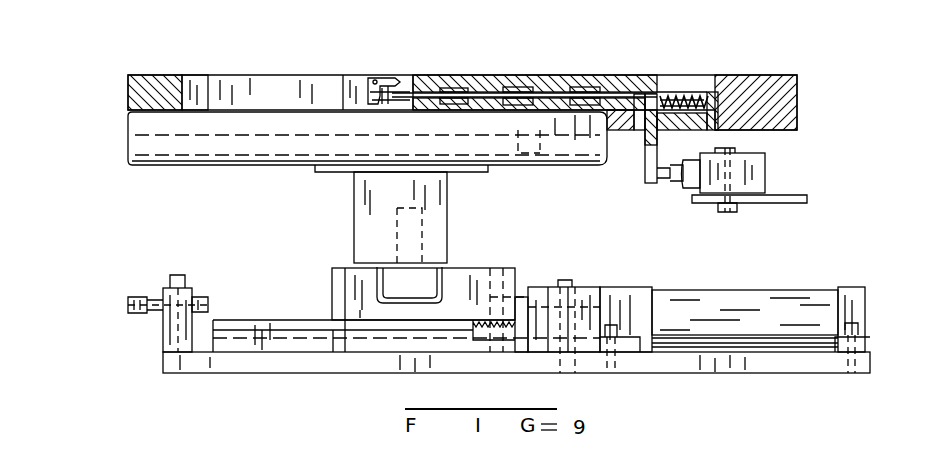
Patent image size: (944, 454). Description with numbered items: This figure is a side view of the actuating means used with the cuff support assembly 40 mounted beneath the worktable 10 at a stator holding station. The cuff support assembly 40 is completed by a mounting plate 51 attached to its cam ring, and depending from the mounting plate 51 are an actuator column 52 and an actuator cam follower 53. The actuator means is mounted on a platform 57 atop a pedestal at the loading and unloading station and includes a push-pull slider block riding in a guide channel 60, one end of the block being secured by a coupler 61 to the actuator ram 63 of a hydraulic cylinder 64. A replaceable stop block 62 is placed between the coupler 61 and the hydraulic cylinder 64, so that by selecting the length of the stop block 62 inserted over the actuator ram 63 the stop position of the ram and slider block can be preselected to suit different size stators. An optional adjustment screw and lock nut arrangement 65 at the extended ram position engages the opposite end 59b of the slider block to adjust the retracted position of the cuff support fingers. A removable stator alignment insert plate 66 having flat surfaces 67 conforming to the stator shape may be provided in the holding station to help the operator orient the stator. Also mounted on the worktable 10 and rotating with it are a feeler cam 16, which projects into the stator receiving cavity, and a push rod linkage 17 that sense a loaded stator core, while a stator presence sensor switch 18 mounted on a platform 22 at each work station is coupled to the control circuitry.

The worktable 10 is at (765, 75).
The feeler cam 16 is at (368, 92).
The push rod linkage 17 is at (548, 90).
The stator presence sensor switch 18 is at (690, 185).
The platform 22 is at (790, 195).
The cuff support assembly 40 is at (190, 168).
The mounting plate 51 is at (466, 173).
The actuator column 52 is at (354, 200).
The actuator cam follower 53 is at (420, 278).
The platform 57 is at (340, 370).
The opposite end of slider block 59b is at (333, 290).
The guide channel 60 is at (277, 320).
The coupler 61 is at (522, 297).
The replaceable stop block 62 is at (540, 287).
The actuator ram 63 is at (541, 360).
The hydraulic cylinder 64 is at (730, 290).
The adjustment screw and lock nut arrangement 65 is at (205, 290).
The removable stator alignment insert plate 66 is at (165, 80).
The flat surface 67 is at (195, 95).